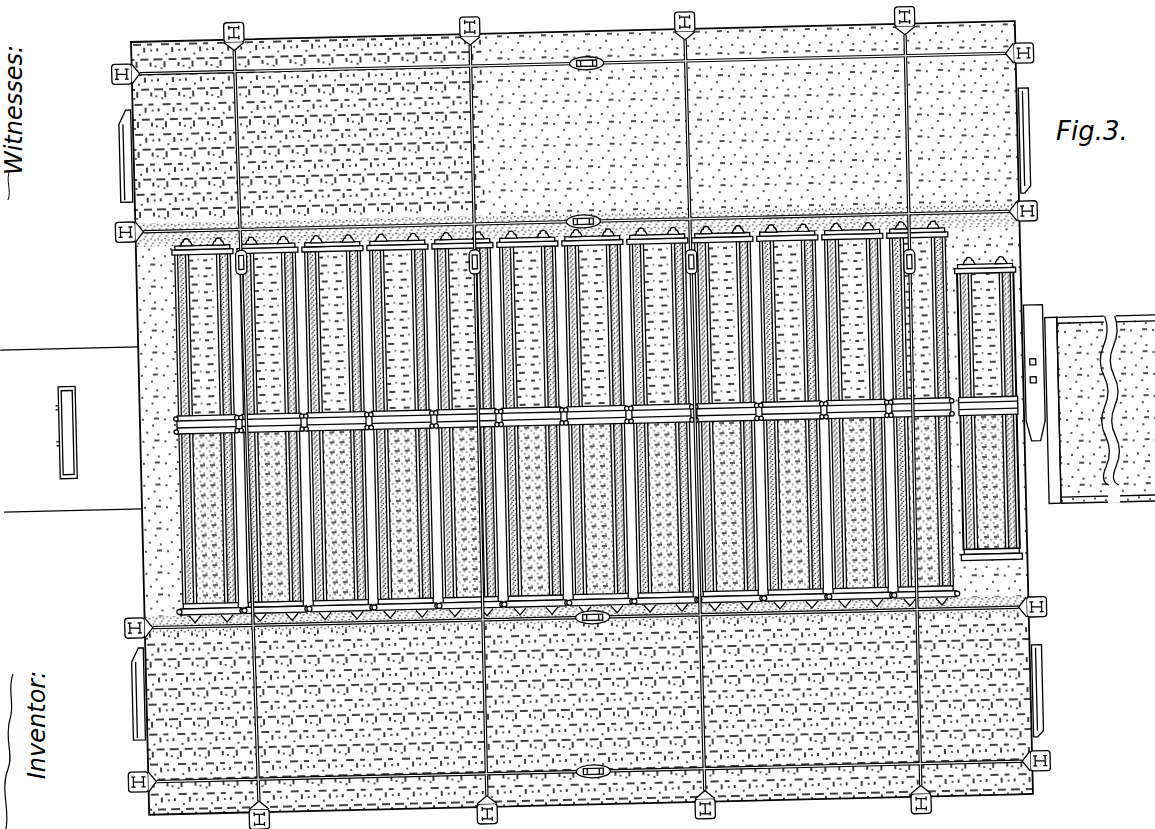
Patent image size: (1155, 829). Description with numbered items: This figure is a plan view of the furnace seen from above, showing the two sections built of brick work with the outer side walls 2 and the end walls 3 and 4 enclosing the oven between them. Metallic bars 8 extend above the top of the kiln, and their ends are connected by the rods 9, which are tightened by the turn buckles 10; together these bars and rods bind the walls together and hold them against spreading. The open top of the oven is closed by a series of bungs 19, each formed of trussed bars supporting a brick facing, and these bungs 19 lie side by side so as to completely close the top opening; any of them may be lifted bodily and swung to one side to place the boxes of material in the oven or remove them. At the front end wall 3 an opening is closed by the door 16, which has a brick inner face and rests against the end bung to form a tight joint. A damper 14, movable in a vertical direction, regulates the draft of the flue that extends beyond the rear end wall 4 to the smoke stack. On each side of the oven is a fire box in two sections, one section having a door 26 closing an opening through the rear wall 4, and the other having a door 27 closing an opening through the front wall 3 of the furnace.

The outer side wall 2 is at (567, 37).
The front end wall 3 is at (1026, 238).
The rear end wall 4 is at (136, 288).
The metallic bar 8 is at (110, 76).
The rod 9 is at (690, 70).
The turn buckle 10 is at (588, 214).
The damper 14 is at (78, 432).
The door 16 is at (1045, 310).
The bung 19 is at (776, 227).
The door 26 is at (120, 156).
The door 27 is at (1032, 152).